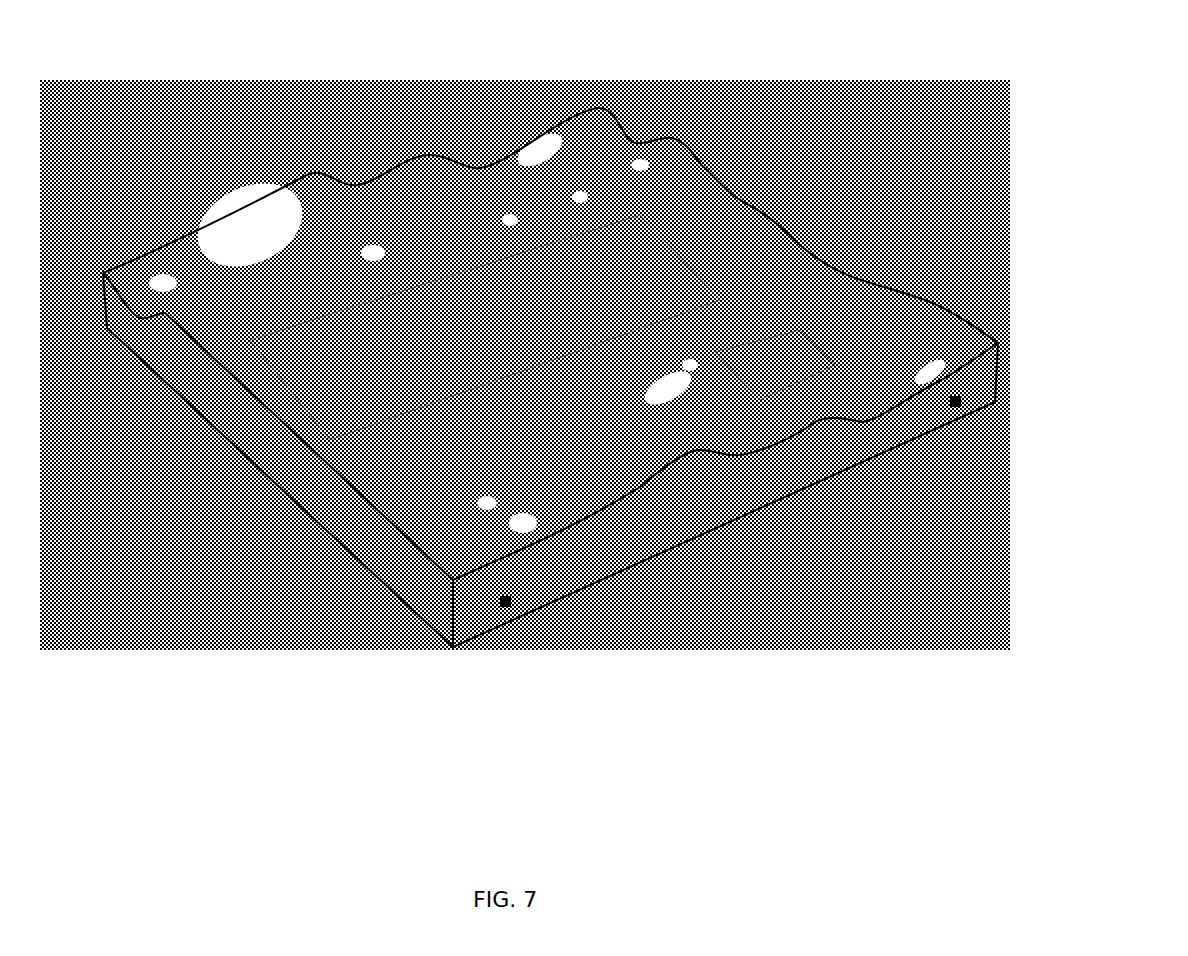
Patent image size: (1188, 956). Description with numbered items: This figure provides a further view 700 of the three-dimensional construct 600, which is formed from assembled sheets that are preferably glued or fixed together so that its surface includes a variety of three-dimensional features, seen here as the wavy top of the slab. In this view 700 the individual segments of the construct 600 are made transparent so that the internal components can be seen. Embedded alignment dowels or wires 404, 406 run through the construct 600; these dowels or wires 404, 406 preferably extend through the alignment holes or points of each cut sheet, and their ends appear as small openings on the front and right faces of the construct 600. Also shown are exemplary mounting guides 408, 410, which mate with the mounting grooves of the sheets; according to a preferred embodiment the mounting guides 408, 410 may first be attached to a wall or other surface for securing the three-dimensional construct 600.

The further view of the three-dimensional construct 700 is at (693, 97).
The mounting guide 408 is at (372, 368).
The mounting guide 410 is at (737, 353).
The alignment dowel/wire 406 is at (955, 410).
The alignment dowel/wire 404 is at (508, 608).
The three-dimensional construct 600 is at (640, 527).